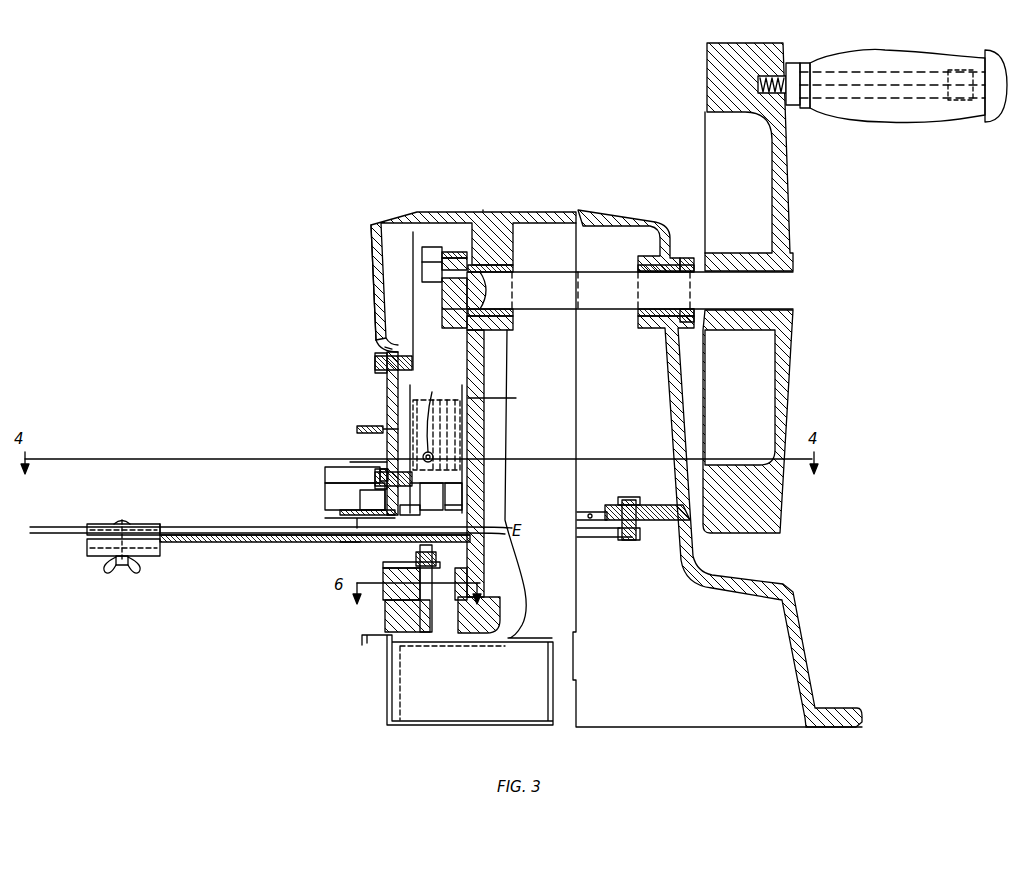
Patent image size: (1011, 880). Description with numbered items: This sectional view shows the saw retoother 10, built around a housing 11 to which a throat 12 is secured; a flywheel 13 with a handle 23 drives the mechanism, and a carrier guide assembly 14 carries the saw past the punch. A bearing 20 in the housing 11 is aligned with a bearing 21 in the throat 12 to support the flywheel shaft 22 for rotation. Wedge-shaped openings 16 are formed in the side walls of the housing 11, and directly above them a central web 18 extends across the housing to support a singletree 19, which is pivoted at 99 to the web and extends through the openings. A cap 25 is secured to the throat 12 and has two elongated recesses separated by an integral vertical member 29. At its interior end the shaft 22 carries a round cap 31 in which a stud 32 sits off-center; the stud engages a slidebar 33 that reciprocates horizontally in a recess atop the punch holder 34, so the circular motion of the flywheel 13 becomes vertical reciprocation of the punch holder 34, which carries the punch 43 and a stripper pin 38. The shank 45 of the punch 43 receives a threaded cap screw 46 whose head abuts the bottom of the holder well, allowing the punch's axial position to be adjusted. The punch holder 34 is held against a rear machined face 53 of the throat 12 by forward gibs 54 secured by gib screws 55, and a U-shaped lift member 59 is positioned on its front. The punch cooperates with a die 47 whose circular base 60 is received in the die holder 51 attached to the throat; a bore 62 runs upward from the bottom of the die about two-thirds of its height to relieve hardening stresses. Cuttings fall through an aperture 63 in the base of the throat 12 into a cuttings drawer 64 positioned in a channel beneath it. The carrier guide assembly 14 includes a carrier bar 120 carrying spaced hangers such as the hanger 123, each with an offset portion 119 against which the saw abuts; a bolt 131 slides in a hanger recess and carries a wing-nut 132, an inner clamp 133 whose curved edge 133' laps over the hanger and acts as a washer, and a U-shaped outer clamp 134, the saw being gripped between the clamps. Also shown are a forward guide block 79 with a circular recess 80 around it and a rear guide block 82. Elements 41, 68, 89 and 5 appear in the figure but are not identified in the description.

The retoother 10 is at (485, 205).
The housing 11 is at (634, 215).
The throat 12 is at (507, 210).
The flywheel 13 is at (792, 168).
The carrier guide assembly 14 is at (263, 524).
The wedge-shaped openings 16 is at (593, 510).
The central web 18 is at (668, 505).
The singletree 19 is at (636, 540).
The bearing 20 is at (684, 258).
The bearing 21 is at (514, 269).
The shaft 22 is at (795, 285).
The handle 23 is at (872, 108).
The cap 25 is at (376, 223).
The integral vertical member 29 is at (387, 392).
The round cap 31 is at (458, 252).
The stud 32 is at (448, 252).
The slidebar 33 is at (430, 247).
The punch holder 34 is at (413, 299).
The stripper pin 38 is at (432, 510).
The pawl 41 is at (433, 418).
The punch 43 is at (453, 510).
The shank 45 is at (480, 442).
The cap screw 46 is at (443, 400).
The die 47 is at (416, 555).
The die holder 51 is at (388, 582).
The rear machined face 53 is at (503, 398).
The forward gibs 54 is at (385, 347).
The gib screws 55 is at (378, 360).
The lift member 59 is at (360, 426).
The circular base 60 is at (400, 568).
The round hole 62 is at (428, 632).
The aperture 63 is at (458, 632).
The cuttings drawer 64 is at (388, 688).
The lever 68 is at (352, 461).
The forward guide block 79 is at (325, 497).
The circular recess 80 is at (340, 512).
The rear guide block 82 is at (408, 515).
The block 89 is at (325, 470).
The pivot 99 is at (629, 497).
The offset portion 119 is at (342, 545).
The carrier bar 120 is at (330, 518).
The hanger 123 is at (224, 535).
The bolt 131 is at (127, 522).
The wing-nut 132 is at (125, 570).
The inner clamp 133 is at (176, 512).
The curved edge 133' is at (123, 511).
The outer clamp 134 is at (160, 552).
The bar 5 is at (244, 542).